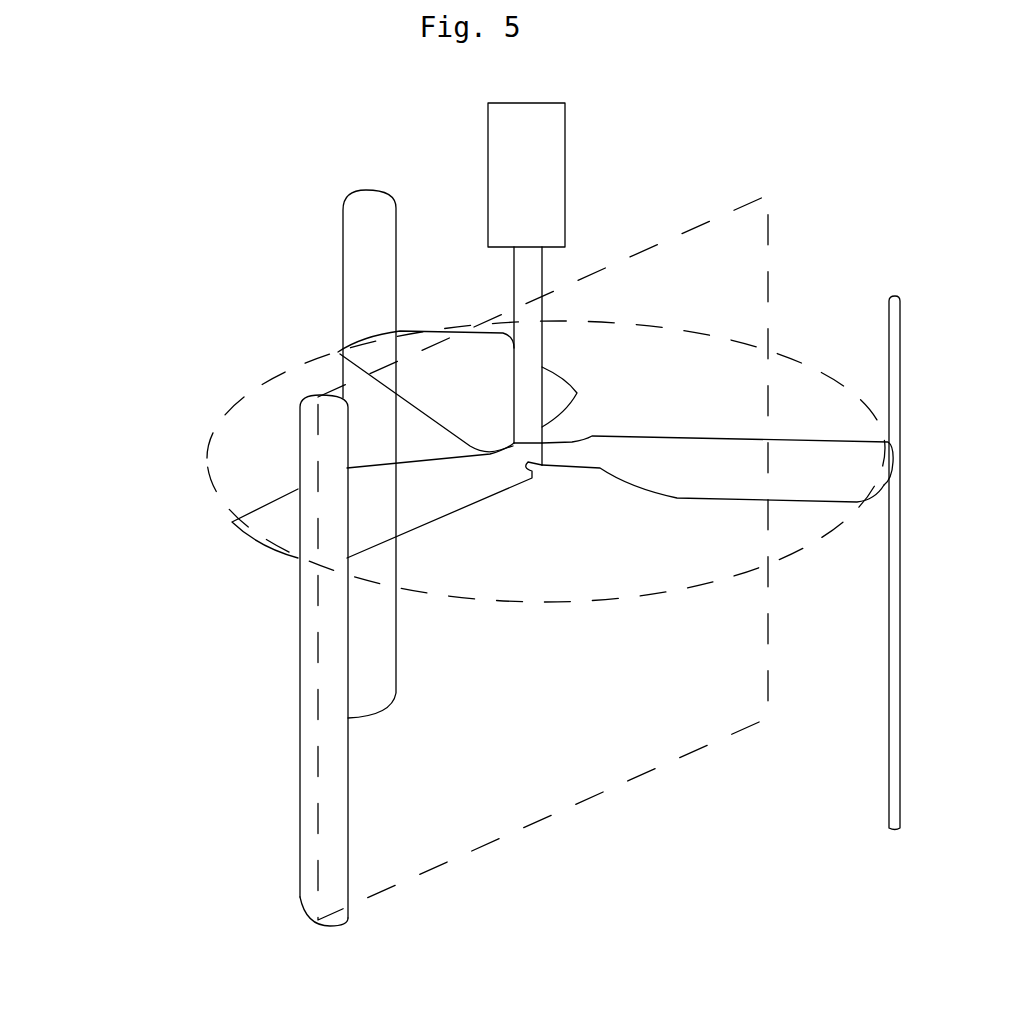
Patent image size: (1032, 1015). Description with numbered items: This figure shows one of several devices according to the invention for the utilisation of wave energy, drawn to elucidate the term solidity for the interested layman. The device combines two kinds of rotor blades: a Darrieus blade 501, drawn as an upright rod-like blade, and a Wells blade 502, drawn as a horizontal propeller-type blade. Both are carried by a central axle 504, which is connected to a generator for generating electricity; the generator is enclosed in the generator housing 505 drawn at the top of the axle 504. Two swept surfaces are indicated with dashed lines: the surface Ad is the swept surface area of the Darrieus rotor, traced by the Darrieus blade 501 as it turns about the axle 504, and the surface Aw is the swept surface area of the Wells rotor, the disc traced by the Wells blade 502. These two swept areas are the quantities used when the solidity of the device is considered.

The Darrieus blade 501 is at (308, 640).
The Wells blade 502 is at (372, 363).
The axle 504 is at (530, 430).
The generator housing 505 is at (510, 162).
The swept surface area of a Darrieus rotor Ad is at (768, 260).
The swept surface area of a Wells rotor Aw is at (208, 442).